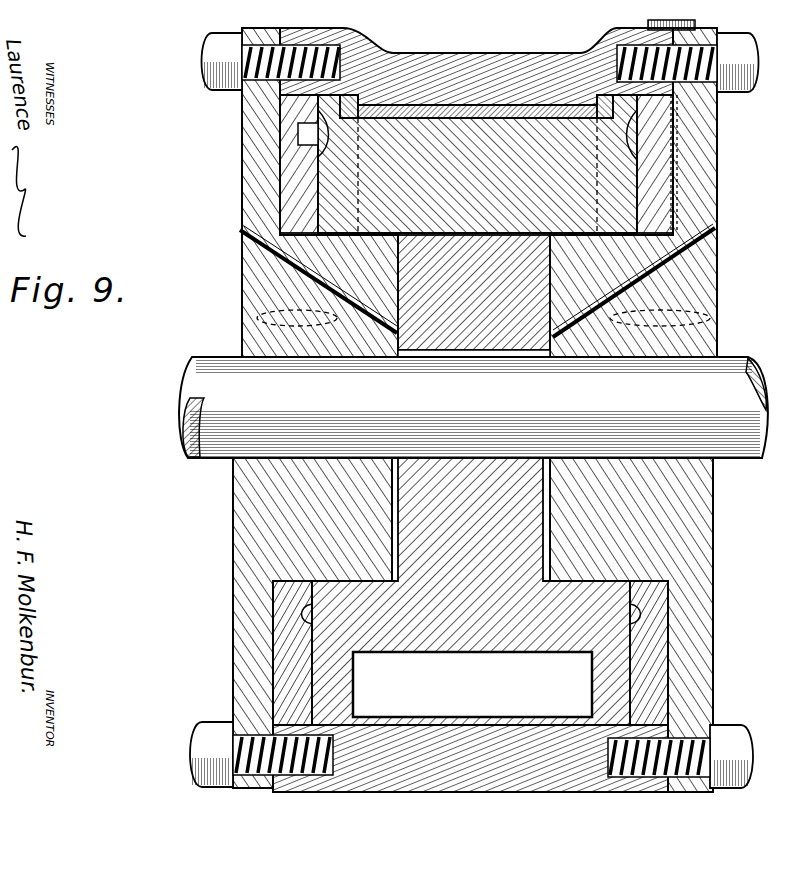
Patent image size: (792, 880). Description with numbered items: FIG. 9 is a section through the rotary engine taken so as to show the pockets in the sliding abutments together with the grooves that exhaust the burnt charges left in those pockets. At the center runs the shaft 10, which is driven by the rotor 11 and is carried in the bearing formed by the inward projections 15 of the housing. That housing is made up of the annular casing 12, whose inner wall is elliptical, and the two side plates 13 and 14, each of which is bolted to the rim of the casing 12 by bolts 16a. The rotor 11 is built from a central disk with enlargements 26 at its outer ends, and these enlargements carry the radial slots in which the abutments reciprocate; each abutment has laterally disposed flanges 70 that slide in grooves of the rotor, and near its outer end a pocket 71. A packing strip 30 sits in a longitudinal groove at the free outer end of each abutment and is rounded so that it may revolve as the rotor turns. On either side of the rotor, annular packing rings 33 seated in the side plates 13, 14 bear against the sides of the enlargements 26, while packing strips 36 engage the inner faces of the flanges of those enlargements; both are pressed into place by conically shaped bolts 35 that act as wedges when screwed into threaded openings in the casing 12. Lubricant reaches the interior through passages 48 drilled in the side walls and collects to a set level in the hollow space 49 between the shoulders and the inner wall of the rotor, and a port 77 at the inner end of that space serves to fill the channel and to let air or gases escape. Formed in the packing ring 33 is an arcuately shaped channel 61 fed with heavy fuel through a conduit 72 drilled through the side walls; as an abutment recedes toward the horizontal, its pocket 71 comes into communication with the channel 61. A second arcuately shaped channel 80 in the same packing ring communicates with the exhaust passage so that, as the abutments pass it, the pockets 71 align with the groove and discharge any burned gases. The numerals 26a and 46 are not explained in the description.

The shaft 10 is at (730, 372).
The rotor 11 is at (781, 417).
The annular casing 12 is at (400, 78).
The side plate 13 is at (242, 282).
The side plate 14 is at (722, 260).
The inward projection 15 is at (333, 508).
The bolt 16a is at (212, 56).
The enlargement 26 is at (625, 575).
The adjusting screw 26a is at (660, 162).
The packing strip 30 is at (447, 105).
The packing ring 33 is at (282, 646).
The conically shaped bolt 35 is at (690, 140).
The packing strip 36 is at (352, 692).
The right wedge 46 is at (715, 232).
The passage 48 is at (242, 232).
The hollow space 49 is at (404, 290).
The arcuately shaped channel 61 is at (300, 617).
The laterally disposed flange 70 is at (352, 200).
The pocket 71 is at (298, 127).
The conduit 72 is at (260, 322).
The port 77 is at (548, 335).
The arcuately shaped channel 80 is at (312, 140).